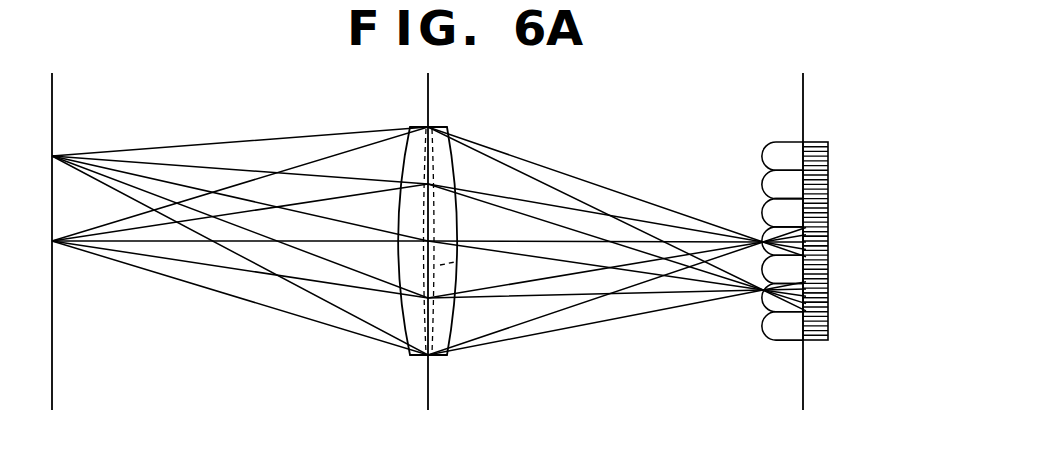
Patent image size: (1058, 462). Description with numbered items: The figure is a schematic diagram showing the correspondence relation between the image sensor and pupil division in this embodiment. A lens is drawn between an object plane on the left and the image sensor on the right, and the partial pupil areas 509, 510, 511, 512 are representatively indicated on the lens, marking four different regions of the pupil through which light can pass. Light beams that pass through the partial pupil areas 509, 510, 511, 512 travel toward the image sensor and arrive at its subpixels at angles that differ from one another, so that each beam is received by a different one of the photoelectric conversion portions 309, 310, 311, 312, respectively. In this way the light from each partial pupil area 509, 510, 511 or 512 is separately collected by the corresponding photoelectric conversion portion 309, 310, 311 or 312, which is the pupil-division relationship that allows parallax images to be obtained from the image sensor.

The photoelectric conversion portion 309 is at (828, 230).
The photoelectric conversion portion 310 is at (828, 235).
The photoelectric conversion portion 311 is at (828, 240).
The photoelectric conversion portion 312 is at (828, 247).
The partial pupil area 509 is at (456, 350).
The partial pupil area 510 is at (455, 262).
The partial pupil area 511 is at (436, 209).
The partial pupil area 512 is at (436, 157).